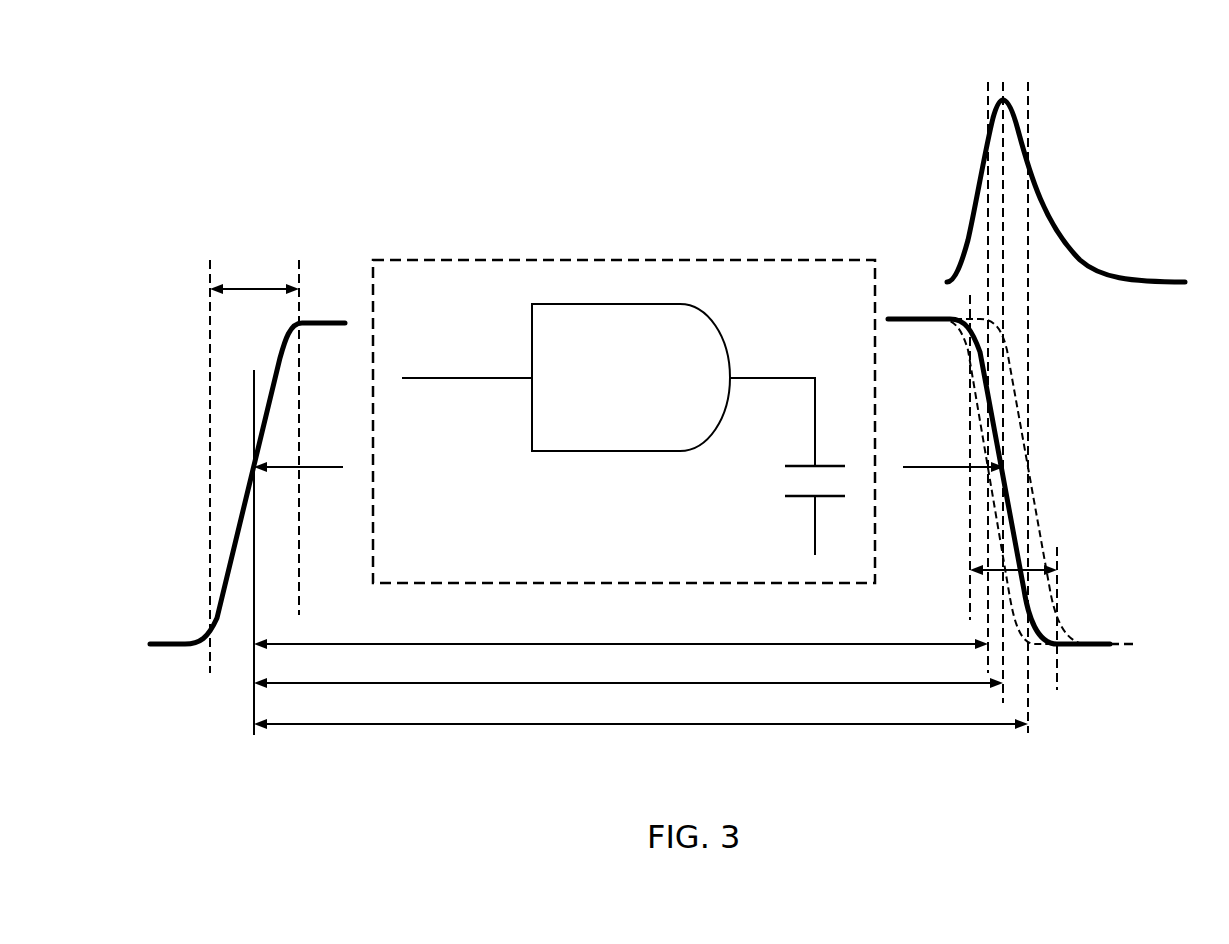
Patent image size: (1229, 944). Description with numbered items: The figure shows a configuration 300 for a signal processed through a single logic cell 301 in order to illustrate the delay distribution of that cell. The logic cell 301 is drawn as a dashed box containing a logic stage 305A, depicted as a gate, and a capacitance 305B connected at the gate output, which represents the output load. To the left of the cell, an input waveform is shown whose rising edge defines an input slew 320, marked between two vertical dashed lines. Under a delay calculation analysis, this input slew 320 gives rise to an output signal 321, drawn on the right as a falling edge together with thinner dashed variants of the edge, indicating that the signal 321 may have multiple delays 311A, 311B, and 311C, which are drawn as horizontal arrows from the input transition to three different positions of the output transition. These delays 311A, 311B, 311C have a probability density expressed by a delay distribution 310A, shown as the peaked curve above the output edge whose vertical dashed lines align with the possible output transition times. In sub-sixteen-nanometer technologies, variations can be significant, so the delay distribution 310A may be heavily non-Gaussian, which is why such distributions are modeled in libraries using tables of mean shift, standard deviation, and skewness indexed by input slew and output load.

The configuration 300 is at (398, 74).
The logic cell 301 is at (461, 561).
The logic stage 305A is at (661, 394).
The capacitance 305B is at (800, 498).
The delay distribution 310A is at (1123, 272).
The delay 311A is at (505, 643).
The delay 311B is at (648, 683).
The delay 311C is at (788, 724).
The input slew 320 is at (252, 288).
The signal 321 is at (1013, 500).